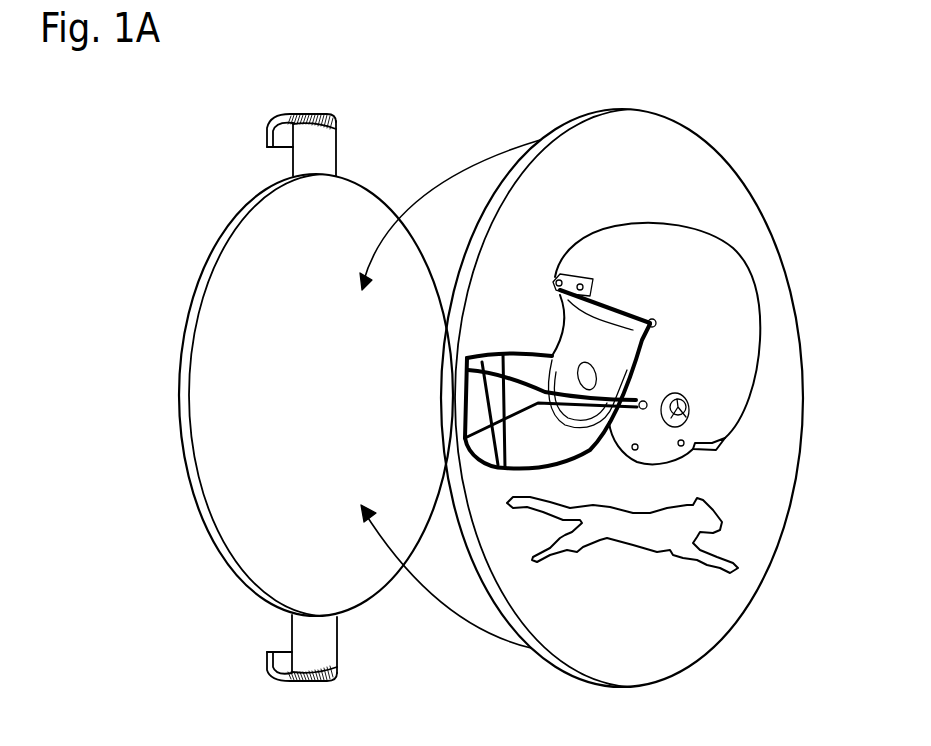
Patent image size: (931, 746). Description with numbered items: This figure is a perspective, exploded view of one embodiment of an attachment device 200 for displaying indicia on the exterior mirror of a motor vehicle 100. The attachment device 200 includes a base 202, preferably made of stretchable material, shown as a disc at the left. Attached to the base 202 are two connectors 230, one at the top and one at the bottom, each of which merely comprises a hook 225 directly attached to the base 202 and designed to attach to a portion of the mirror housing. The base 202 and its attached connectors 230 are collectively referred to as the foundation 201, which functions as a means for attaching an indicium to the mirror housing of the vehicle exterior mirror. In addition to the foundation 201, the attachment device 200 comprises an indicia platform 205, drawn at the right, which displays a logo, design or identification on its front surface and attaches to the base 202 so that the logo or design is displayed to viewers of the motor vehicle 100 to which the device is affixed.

The motor vehicle 100 is at (38, 716).
The attachment device 200 is at (805, 120).
The foundation 201 is at (185, 290).
The base 202 is at (202, 438).
The indicia platform 205 is at (786, 486).
The hook 225 is at (337, 143).
The connector 230 is at (257, 108).